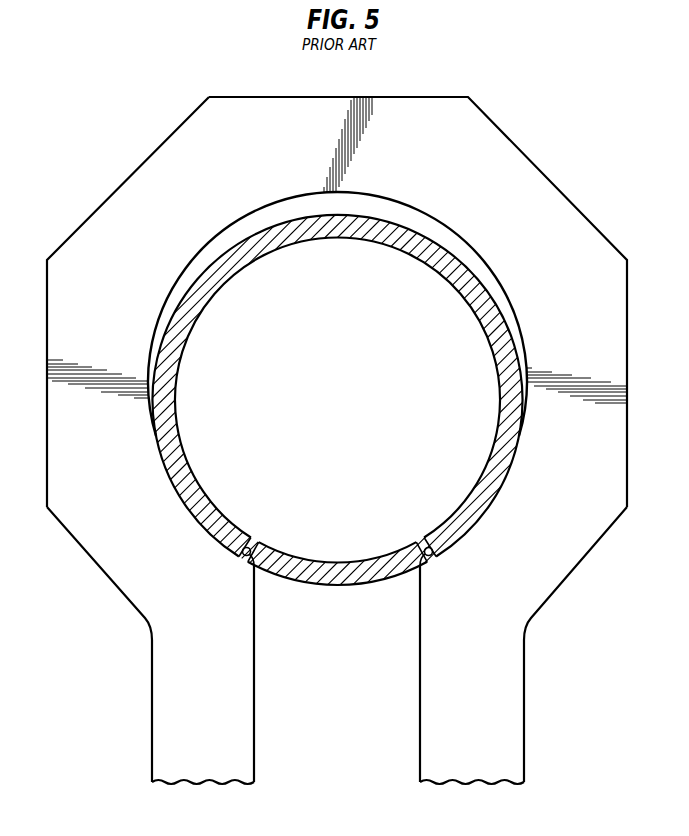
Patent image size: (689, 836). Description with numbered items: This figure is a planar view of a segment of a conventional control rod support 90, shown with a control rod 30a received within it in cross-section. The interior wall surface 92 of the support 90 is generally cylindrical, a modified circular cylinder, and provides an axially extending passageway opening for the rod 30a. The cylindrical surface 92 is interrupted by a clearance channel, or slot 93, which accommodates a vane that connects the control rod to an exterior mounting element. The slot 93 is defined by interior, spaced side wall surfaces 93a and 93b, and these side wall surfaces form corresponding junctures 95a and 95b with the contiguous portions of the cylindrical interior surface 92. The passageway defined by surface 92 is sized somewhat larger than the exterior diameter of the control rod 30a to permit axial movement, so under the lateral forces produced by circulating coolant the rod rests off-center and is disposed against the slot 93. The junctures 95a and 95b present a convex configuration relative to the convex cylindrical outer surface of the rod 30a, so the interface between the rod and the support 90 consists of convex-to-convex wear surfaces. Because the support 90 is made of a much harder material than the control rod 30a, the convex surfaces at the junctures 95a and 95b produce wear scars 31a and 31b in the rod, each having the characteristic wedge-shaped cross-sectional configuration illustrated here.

The support 90 is at (574, 133).
The interior wall surface 92 is at (250, 216).
The control rod 30a is at (214, 289).
The wear scar 31a is at (247, 546).
The wear scar 31b is at (432, 541).
The juncture 95a is at (244, 559).
The juncture 95b is at (430, 558).
The side wall surface 93a is at (254, 670).
The side wall surface 93b is at (420, 668).
The slot 93 is at (369, 750).